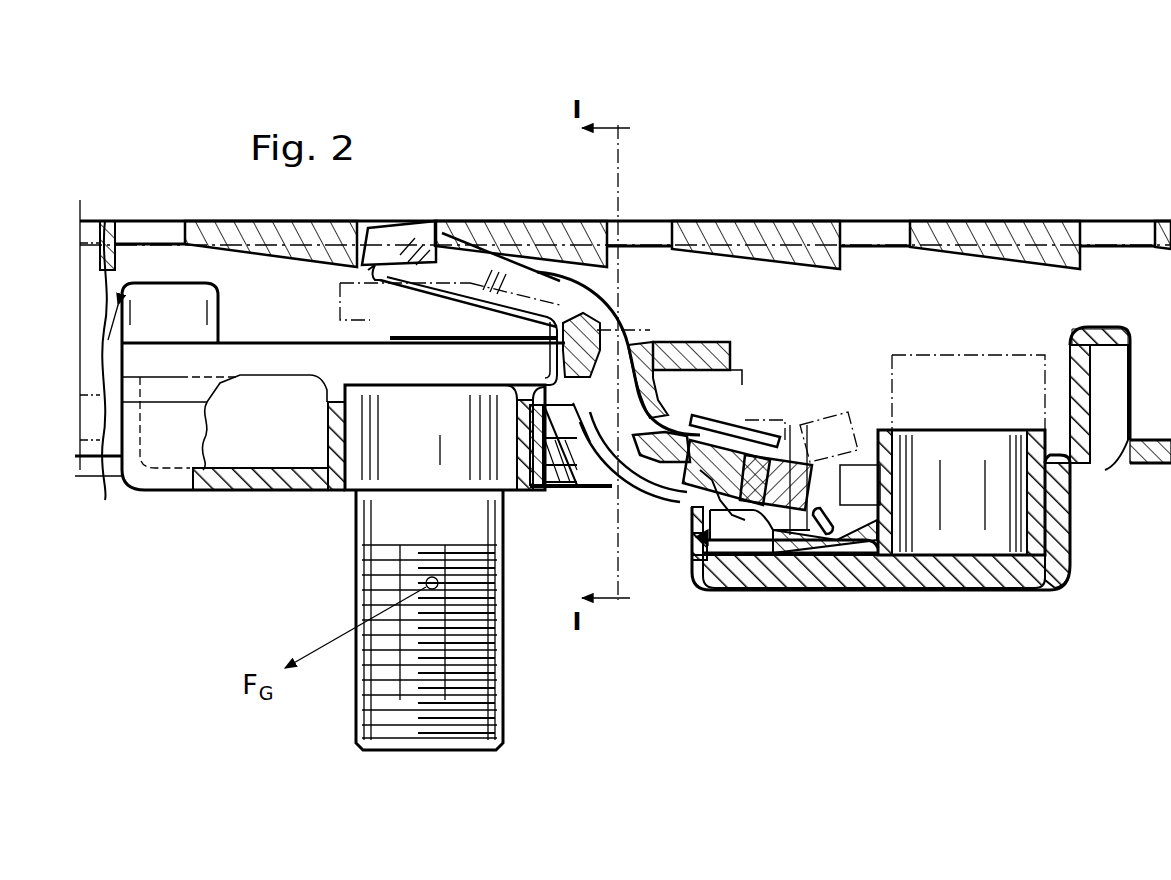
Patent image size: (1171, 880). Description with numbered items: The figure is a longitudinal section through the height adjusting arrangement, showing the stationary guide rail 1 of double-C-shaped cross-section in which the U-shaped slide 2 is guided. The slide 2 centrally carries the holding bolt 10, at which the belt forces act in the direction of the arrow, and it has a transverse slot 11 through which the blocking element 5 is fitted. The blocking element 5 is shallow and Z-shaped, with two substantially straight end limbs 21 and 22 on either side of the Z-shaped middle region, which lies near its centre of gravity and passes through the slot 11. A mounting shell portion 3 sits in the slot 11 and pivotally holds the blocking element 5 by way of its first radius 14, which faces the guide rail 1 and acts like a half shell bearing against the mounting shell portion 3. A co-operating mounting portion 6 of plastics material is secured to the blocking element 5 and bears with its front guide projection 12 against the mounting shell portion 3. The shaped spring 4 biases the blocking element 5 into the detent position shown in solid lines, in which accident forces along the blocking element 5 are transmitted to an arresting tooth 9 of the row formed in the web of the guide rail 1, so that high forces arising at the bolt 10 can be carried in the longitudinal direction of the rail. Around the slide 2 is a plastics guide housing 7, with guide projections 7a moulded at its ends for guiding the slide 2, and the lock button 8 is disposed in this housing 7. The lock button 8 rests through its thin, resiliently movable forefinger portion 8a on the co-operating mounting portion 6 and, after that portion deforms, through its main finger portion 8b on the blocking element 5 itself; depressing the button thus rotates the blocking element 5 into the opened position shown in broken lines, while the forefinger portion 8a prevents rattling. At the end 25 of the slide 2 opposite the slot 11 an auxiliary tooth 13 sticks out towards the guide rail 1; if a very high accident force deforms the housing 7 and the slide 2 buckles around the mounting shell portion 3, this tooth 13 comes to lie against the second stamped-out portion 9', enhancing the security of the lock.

The guide rail 1 is at (552, 490).
The slide 2 is at (180, 370).
The mounting shell portion 3 is at (598, 330).
The shaped spring 4 is at (420, 292).
The blocking element 5 is at (603, 487).
The co-operating mounting portion 6 is at (692, 512).
The guide housing 7 is at (537, 490).
The guide projections 7a is at (1112, 392).
The lock button 8 is at (912, 588).
The forefinger portion 8a is at (698, 572).
The main finger portion 8b is at (845, 520).
The arresting teeth 9 is at (625, 223).
The second stamped-out portion 9' is at (97, 335).
The holding bolt 10 is at (503, 630).
The transverse slot 11 is at (645, 362).
The front guide projection 12 is at (565, 488).
The auxiliary tooth 13 is at (132, 265).
The first radius 14 is at (595, 305).
The end limb 21 is at (386, 250).
The end limb 22 is at (740, 535).
The end of the slide 25 is at (270, 367).